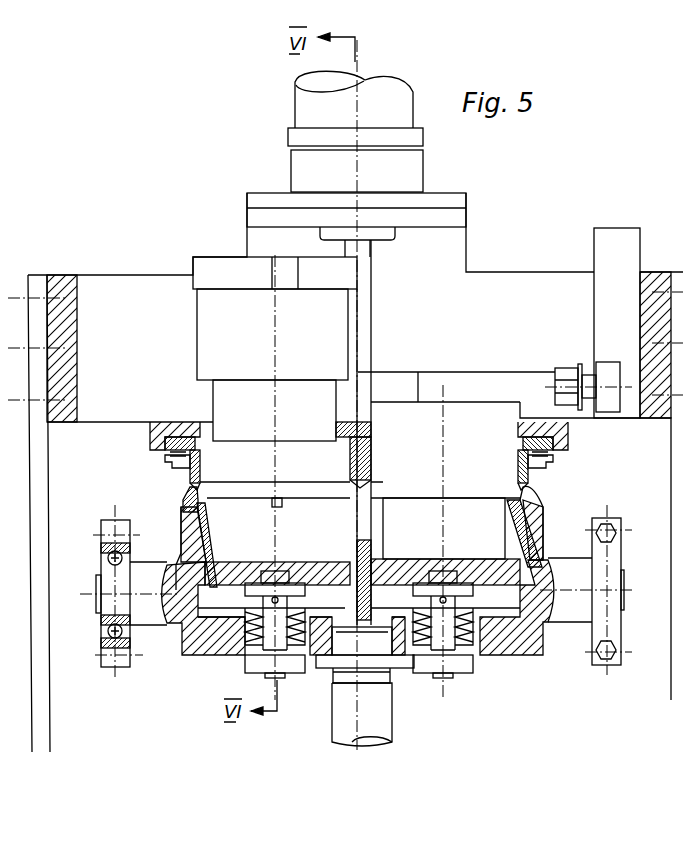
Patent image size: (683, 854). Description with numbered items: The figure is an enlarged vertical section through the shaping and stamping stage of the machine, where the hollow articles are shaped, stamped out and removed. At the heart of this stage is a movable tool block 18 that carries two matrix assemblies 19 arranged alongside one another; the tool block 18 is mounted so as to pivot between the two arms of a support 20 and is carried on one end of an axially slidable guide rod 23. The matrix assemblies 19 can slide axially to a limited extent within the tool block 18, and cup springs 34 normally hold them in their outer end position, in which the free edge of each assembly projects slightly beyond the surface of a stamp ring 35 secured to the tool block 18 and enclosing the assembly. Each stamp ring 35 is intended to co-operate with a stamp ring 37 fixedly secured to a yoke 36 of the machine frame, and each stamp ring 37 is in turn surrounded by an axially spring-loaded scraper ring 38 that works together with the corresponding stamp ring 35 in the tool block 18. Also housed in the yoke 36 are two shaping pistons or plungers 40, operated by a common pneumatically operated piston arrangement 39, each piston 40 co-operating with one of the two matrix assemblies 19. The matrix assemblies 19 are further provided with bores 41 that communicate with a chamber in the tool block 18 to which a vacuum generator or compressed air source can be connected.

The tool block 18 is at (526, 643).
The matrix assembly 19 is at (198, 560).
The support 20 is at (120, 527).
The guide rod 23 is at (342, 722).
The cup springs 34 is at (247, 638).
The stamp ring 35 is at (185, 500).
The yoke 36 is at (72, 329).
The stamp ring 37 is at (200, 457).
The scraper ring 38 is at (553, 463).
The pneumatically operated piston arrangement 39 is at (408, 174).
The shaping piston 40 is at (222, 398).
The bores 41 is at (214, 528).